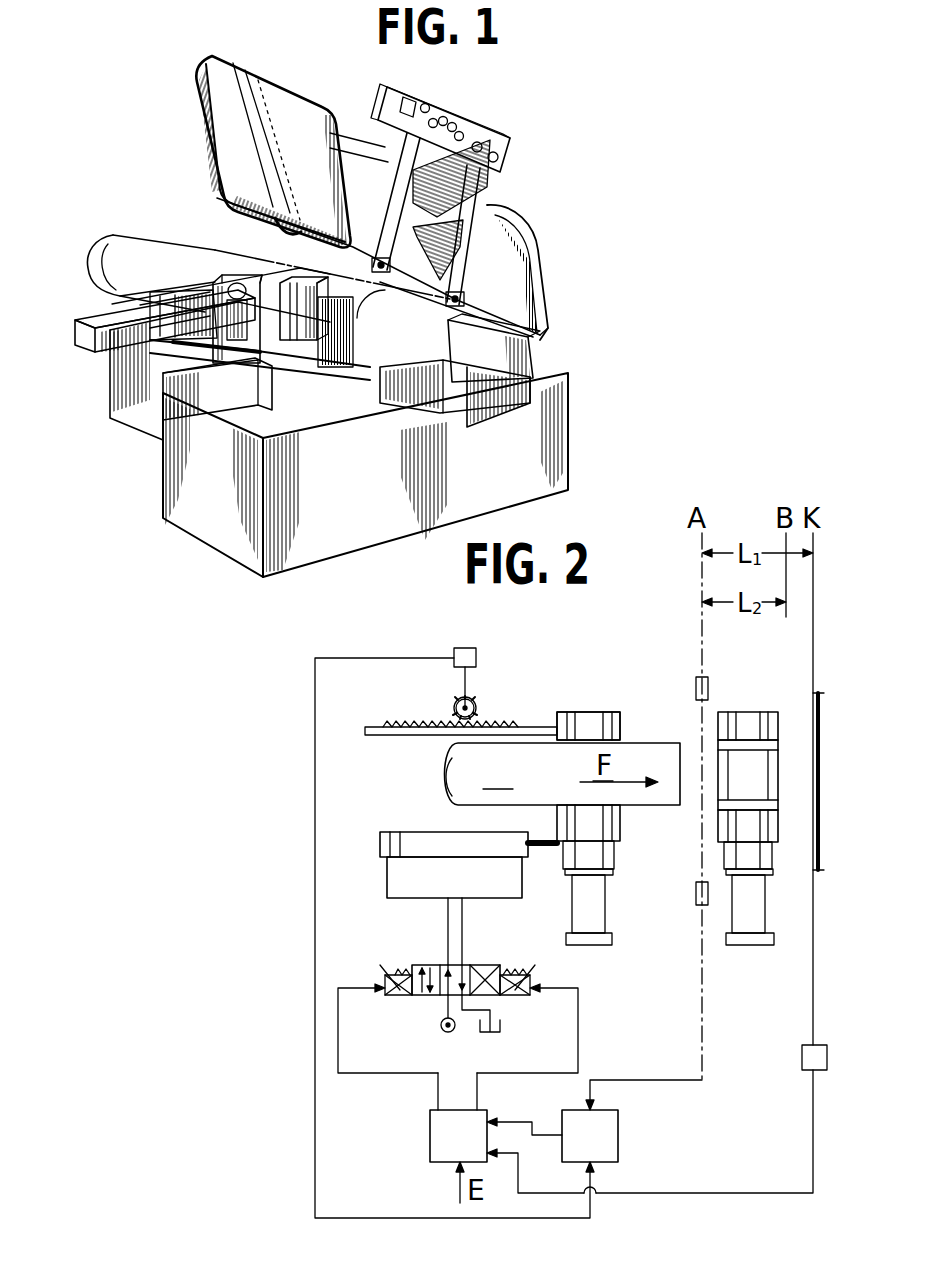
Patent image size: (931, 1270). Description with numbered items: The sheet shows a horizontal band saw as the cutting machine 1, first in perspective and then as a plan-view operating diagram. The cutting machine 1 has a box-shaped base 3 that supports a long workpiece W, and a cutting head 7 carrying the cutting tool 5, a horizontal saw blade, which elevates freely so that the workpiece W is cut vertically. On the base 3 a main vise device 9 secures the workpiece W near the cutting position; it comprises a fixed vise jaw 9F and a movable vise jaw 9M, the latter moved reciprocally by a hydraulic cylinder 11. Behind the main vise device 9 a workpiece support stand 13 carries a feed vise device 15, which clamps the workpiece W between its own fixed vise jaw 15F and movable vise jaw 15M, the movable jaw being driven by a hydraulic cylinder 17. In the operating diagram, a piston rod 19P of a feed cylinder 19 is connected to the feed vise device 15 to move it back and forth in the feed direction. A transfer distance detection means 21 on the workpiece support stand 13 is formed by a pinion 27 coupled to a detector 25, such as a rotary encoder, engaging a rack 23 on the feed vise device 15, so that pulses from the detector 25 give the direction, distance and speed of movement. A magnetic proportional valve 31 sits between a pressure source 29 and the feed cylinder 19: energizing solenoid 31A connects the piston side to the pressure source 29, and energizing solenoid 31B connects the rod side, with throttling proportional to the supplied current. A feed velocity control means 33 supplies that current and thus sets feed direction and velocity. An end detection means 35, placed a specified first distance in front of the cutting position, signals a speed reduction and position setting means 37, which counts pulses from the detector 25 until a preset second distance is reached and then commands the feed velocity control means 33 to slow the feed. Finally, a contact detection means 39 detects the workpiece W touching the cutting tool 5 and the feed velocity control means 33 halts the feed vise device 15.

In FIG. 1, the cutting machine 1 is at (526, 193).
In FIG. 1, the base 3 is at (233, 538).
In FIG. 1, the cutting tool 5 is at (450, 280).
In FIG. 2, the cutting tool 5 is at (822, 830).
In FIG. 1, the cutting head 7 is at (298, 95).
In FIG. 1, the main vise device 9 is at (320, 415).
In FIG. 2, the main vise device 9 is at (782, 758).
In FIG. 1, the fixed vise jaw 9F is at (535, 340).
In FIG. 2, the fixed vise jaw 9F is at (750, 720).
In FIG. 1, the movable vise jaw 9M is at (377, 417).
In FIG. 2, the movable vise jaw 9M is at (765, 807).
In FIG. 1, the hydraulic cylinder 11 is at (204, 406).
In FIG. 2, the hydraulic cylinder 11 is at (767, 907).
In FIG. 1, the workpiece support stand 13 is at (118, 294).
In FIG. 1, the feed vise device 15 is at (194, 370).
In FIG. 2, the feed vise device 15 is at (577, 712).
In FIG. 1, the fixed vise jaw 15F is at (289, 267).
In FIG. 2, the fixed vise jaw 15F is at (610, 712).
In FIG. 1, the movable vise jaw 15M is at (225, 278).
In FIG. 2, the movable vise jaw 15M is at (616, 828).
In FIG. 1, the hydraulic cylinder 17 is at (86, 340).
In FIG. 2, the hydraulic cylinder 17 is at (605, 902).
In FIG. 2, the feed cylinder 19 is at (407, 832).
In FIG. 2, the piston rod 19P is at (538, 847).
In FIG. 2, the transfer distance detection means 21 is at (472, 699).
In FIG. 2, the rack 23 is at (390, 724).
In FIG. 2, the detector 25 is at (454, 648).
In FIG. 2, the pinion 27 is at (454, 706).
In FIG. 2, the pressure source 29 is at (456, 1032).
In FIG. 2, the magnetic proportional throttling directional switching valve 31 is at (428, 964).
In FIG. 2, the solenoid 31A is at (394, 998).
In FIG. 2, the solenoid 31B is at (524, 998).
In FIG. 2, the feed velocity control means 33 is at (430, 1133).
In FIG. 2, the end detection means 35 is at (695, 687).
In FIG. 2, the speed reduction and position setting means 37 is at (618, 1140).
In FIG. 2, the contact detection means 39 is at (826, 1056).
In FIG. 1, the workpiece W is at (112, 230).
In FIG. 2, the workpiece W is at (563, 774).